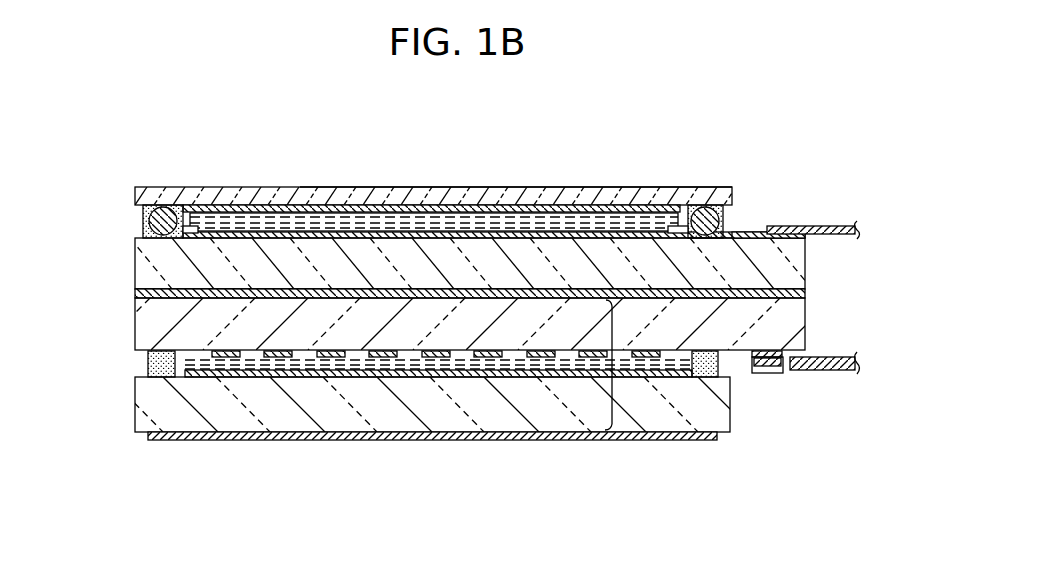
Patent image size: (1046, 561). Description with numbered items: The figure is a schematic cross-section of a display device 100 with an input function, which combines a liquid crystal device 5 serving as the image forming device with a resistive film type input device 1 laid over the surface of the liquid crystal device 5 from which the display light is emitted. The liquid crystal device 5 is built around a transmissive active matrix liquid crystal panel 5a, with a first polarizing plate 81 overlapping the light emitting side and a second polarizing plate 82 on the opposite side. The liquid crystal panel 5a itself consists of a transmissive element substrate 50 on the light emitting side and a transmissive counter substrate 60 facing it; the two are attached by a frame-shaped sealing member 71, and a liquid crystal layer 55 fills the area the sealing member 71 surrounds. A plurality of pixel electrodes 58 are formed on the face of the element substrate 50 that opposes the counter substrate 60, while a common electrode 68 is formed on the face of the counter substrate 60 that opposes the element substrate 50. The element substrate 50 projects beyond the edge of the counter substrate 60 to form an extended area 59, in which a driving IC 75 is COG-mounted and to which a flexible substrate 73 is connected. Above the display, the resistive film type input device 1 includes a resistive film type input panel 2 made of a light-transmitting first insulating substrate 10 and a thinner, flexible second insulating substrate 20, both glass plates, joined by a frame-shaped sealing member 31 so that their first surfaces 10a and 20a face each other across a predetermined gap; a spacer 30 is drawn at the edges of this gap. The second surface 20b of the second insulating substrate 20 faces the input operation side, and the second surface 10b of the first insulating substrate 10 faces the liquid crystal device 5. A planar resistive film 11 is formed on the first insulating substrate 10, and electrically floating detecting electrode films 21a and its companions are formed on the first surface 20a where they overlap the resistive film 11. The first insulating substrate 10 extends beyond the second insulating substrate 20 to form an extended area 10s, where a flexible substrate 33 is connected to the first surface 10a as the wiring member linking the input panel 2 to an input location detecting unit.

The display device with an input function 100 is at (141, 122).
The resistive film type input device 1 is at (825, 207).
The resistive film type input panel 2 is at (65, 147).
The liquid crystal device 5 is at (65, 288).
The liquid crystal panel 5a is at (612, 318).
The first insulating substrate 10 is at (150, 271).
The first surface of the first insulating substrate 10a is at (276, 235).
The second surface of the first insulating substrate 10b is at (304, 298).
The extended area 10s is at (760, 207).
The planar resistive film 11 is at (360, 235).
The second insulating substrate 20 is at (138, 194).
The first surface of the second insulating substrate 20a is at (468, 212).
The second surface of the second insulating substrate 20b is at (518, 187).
The detecting electrode film 21a is at (619, 215).
The spacer 30 is at (163, 230).
The sealing member 31 is at (175, 200).
The flexible substrate 33 is at (836, 236).
The element substrate 50 is at (147, 325).
The liquid crystal layer 55 is at (520, 360).
The pixel electrodes 58 is at (332, 358).
The extended area 59 is at (708, 377).
The counter substrate 60 is at (147, 393).
The common electrode 68 is at (430, 374).
The sealing member 71 is at (760, 386).
The flexible substrate 73 is at (838, 370).
The driving IC 75 is at (775, 368).
The first polarizing plate 81 is at (138, 293).
The second polarizing plate 82 is at (157, 433).